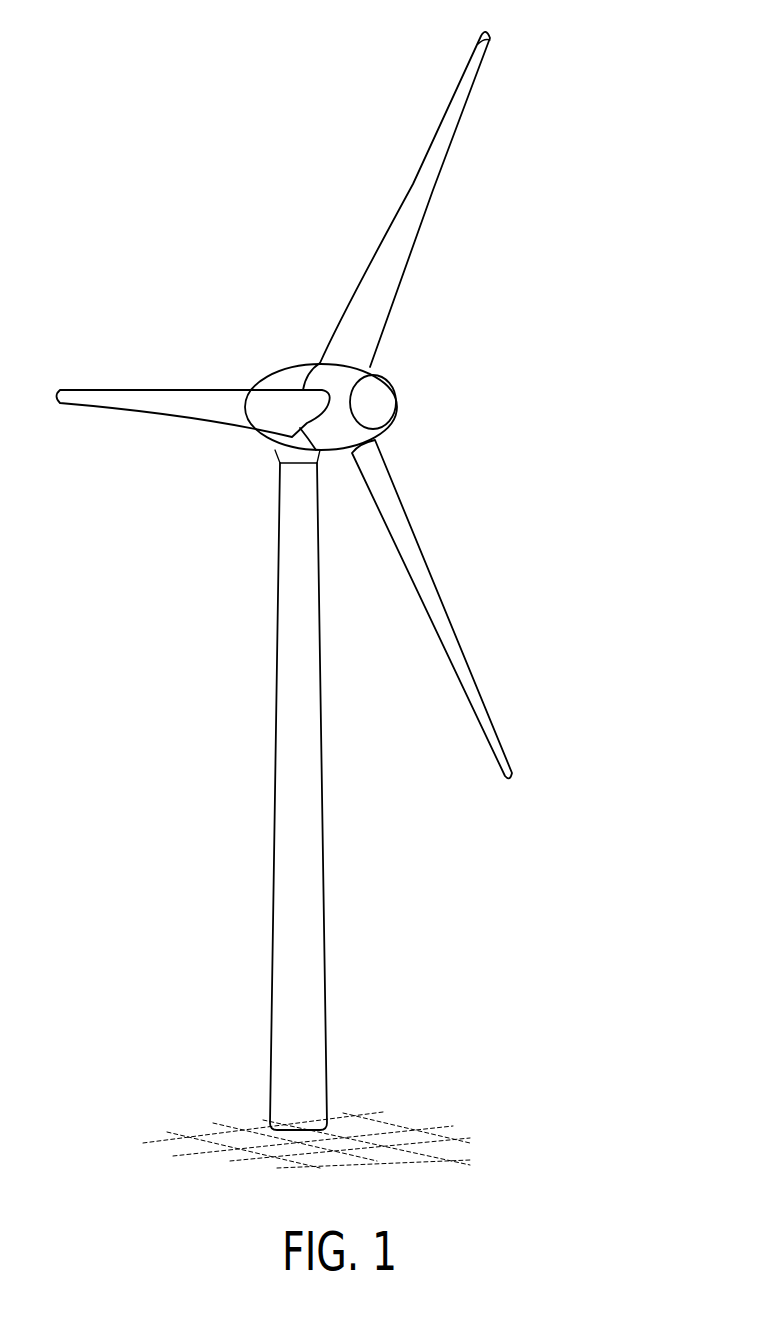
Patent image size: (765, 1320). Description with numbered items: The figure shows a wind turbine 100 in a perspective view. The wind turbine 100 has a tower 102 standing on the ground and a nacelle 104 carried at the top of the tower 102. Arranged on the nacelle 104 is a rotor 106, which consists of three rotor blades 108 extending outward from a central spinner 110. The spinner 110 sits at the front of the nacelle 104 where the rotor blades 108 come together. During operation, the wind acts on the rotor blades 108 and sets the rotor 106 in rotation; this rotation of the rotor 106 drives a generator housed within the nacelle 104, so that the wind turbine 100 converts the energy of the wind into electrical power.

The wind turbine 100 is at (218, 533).
The tower 102 is at (318, 882).
The nacelle 104 is at (282, 378).
The rotor 106 is at (525, 305).
The rotor blades 108 is at (412, 196).
The spinner 110 is at (393, 401).